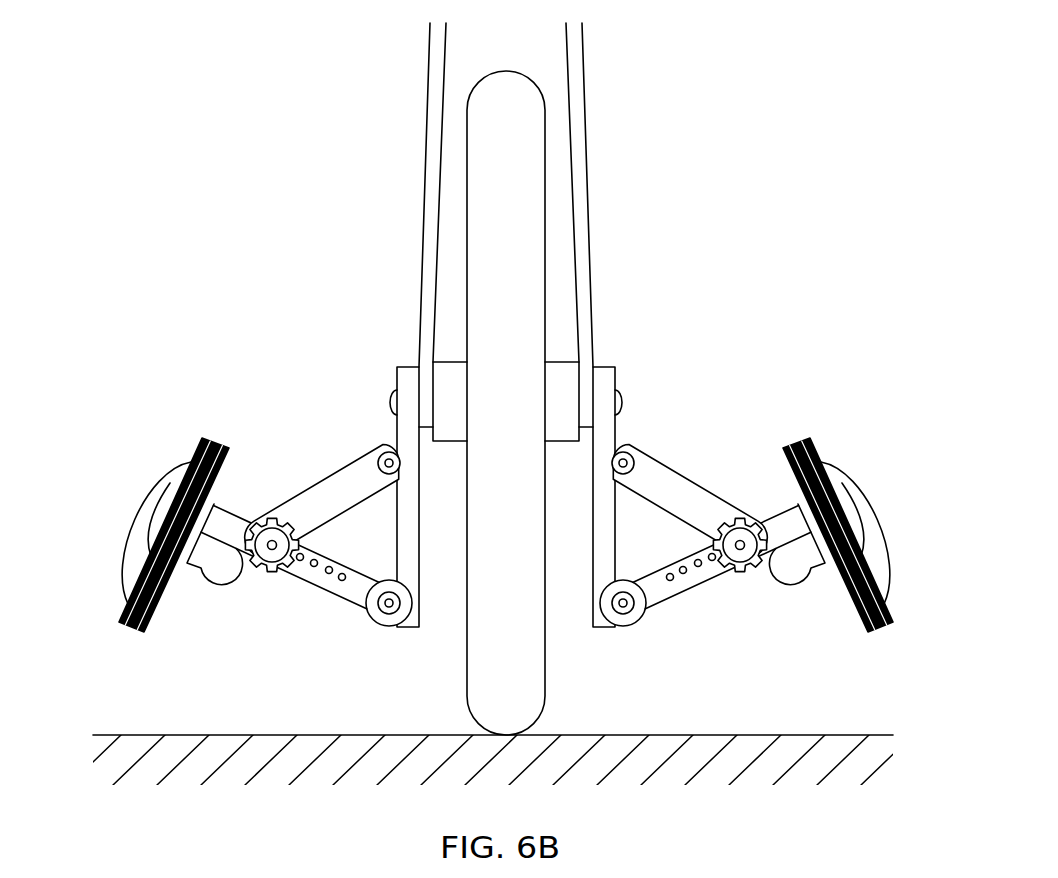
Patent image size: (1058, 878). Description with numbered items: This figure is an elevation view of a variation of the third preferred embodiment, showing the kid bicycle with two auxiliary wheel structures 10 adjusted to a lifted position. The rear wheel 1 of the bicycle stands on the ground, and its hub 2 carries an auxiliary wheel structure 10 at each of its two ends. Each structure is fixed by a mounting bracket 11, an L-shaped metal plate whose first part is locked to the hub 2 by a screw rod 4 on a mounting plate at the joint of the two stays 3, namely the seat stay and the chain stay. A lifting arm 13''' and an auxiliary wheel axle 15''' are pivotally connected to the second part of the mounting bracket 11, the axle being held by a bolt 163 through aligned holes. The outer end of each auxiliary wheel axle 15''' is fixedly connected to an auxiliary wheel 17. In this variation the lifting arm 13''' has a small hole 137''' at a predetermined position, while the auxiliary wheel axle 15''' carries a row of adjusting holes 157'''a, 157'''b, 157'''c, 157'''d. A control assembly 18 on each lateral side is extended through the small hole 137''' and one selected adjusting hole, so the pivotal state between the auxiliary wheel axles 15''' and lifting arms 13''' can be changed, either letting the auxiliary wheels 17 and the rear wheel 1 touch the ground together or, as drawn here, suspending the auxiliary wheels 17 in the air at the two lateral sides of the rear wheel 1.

The rear wheel 1 is at (517, 103).
The hub 2 is at (445, 390).
The stays 3 is at (593, 277).
The screw rod 4 is at (622, 388).
The auxiliary wheel structure 10 is at (797, 315).
The mounting bracket 11 is at (613, 532).
The lifting arm 13''' is at (690, 479).
The small hole 137''' is at (729, 448).
The auxiliary wheel axle 15''' is at (705, 566).
The adjusting hole 157'''a is at (686, 619).
The adjusting hole 157'''b is at (731, 637).
The adjusting hole 157'''c is at (764, 608).
The adjusting hole 157'''d is at (810, 630).
The bolt 163 is at (628, 612).
The auxiliary wheel 17 is at (812, 440).
The control assembly 18 is at (755, 497).